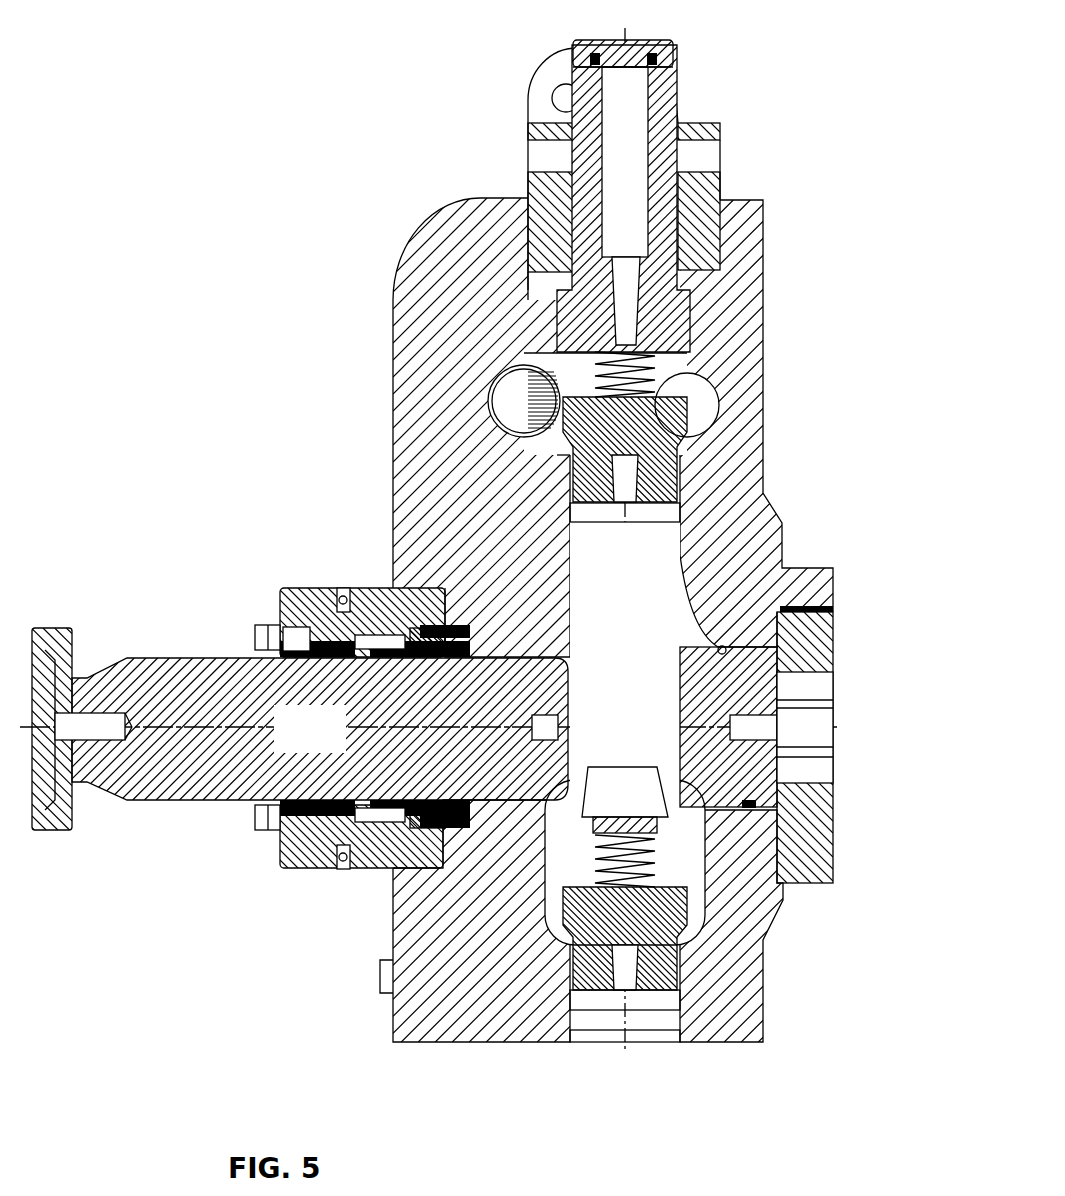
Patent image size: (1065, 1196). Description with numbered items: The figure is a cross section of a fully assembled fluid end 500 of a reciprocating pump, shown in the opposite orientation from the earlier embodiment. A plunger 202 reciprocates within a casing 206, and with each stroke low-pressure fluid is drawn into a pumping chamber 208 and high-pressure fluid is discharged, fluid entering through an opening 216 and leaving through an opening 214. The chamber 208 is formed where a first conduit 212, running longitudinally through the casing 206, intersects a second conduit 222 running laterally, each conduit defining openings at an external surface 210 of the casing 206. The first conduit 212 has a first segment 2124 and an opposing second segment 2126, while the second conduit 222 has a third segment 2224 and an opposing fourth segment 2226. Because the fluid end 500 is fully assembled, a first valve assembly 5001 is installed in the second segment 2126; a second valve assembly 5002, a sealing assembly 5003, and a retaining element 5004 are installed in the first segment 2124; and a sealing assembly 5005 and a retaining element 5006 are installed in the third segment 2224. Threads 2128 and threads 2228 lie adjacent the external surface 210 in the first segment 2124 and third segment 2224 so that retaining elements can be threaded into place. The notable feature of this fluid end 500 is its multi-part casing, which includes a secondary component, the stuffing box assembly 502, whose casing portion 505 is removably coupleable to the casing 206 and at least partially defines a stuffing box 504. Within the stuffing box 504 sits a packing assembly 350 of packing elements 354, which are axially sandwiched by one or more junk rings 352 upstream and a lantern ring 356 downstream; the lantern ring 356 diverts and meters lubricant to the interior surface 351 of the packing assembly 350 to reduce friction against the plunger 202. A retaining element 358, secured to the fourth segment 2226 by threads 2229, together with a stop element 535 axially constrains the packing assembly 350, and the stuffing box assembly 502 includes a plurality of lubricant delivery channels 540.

The plunger 202 is at (300, 729).
The casing 206 is at (420, 275).
The pumping chamber 208 is at (625, 733).
The external surface 210 is at (629, 180).
The first conduit 212 is at (665, 520).
The opening 214 is at (515, 415).
The opening 216 is at (673, 1040).
The second conduit 222 is at (742, 642).
The packing assembly 350 is at (322, 843).
The interior surface 351 is at (300, 783).
The junk ring 352 is at (413, 822).
The packing elements 354 is at (370, 815).
The lantern ring 356 is at (305, 828).
The retaining element 358 is at (267, 630).
The fluid end 500 is at (805, 378).
The stuffing box assembly 502 is at (278, 572).
The stuffing box 504 is at (375, 627).
The casing portion 505 is at (293, 612).
The stop element 535 is at (437, 638).
The lubricant delivery channels 540 is at (337, 592).
The first segment 2124 is at (700, 378).
The second segment 2126 is at (583, 1012).
The threads 2128 is at (720, 232).
The third segment 2224 is at (750, 810).
The fourth segment 2226 is at (533, 652).
The threads 2228 is at (833, 610).
The threads 2229 is at (427, 862).
The first valve assembly 5001 is at (668, 912).
The second valve assembly 5002 is at (625, 388).
The sealing assembly 5003 is at (645, 302).
The retaining element 5004 is at (583, 66).
The sealing assembly 5005 is at (772, 757).
The retaining element 5006 is at (833, 658).